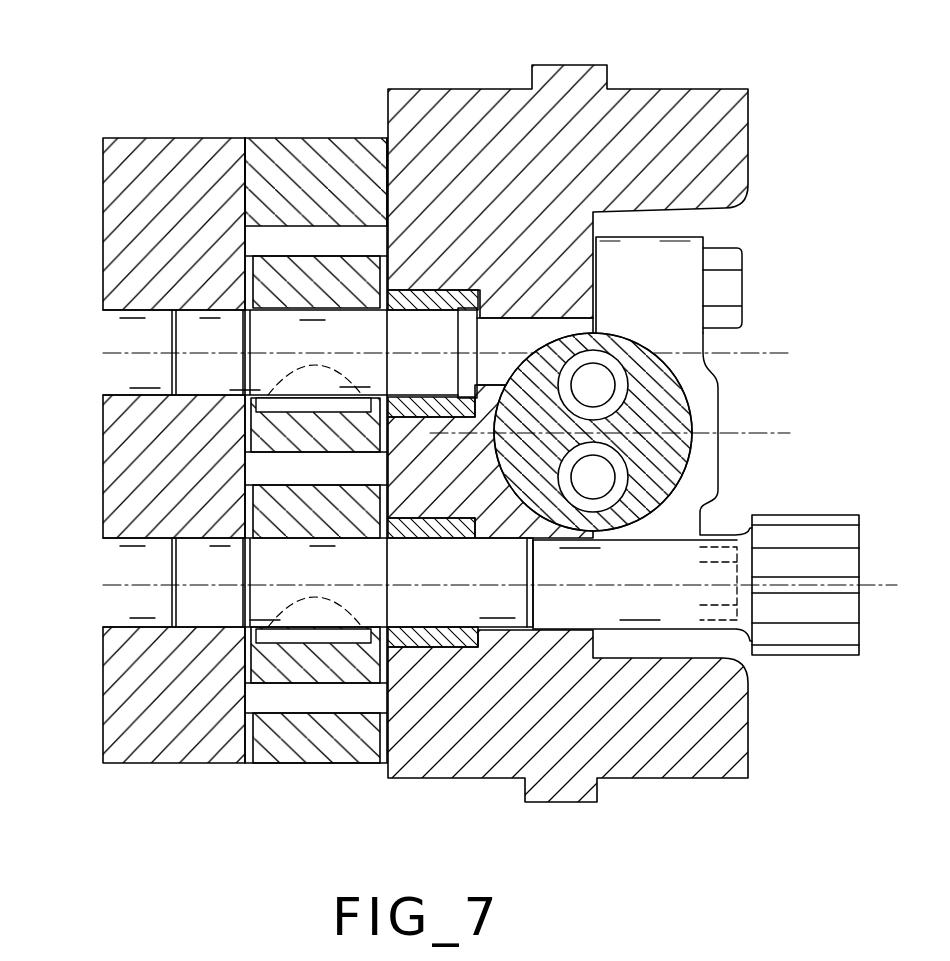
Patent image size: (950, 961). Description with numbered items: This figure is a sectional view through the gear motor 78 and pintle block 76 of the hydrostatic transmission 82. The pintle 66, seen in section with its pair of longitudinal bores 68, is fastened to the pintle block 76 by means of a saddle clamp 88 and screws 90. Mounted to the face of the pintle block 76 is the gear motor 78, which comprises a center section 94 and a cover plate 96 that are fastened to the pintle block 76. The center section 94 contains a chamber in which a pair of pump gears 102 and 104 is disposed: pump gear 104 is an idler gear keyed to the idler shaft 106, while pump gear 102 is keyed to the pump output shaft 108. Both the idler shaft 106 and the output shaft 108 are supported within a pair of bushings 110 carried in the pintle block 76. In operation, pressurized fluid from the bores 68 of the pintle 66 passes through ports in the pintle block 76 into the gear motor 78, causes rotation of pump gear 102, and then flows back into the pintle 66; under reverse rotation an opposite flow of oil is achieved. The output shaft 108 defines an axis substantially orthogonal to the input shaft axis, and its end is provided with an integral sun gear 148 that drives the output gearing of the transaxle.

The pintle 66 is at (690, 412).
The longitudinal bores 68 is at (623, 382).
The pintle block 76 is at (643, 89).
The gear motor 78 is at (128, 781).
The hydrostatic transmission 82 is at (772, 92).
The saddle clamp 88 is at (688, 247).
The screws 90 is at (725, 285).
The center section 94 is at (322, 142).
The cover plate 96 is at (168, 142).
The pump gear 102 is at (283, 493).
The pump gear 104 is at (283, 268).
The idler shaft 106 is at (207, 347).
The pump output shaft 108 is at (348, 590).
The bushings 110 is at (415, 298).
The sun gear 148 is at (815, 655).